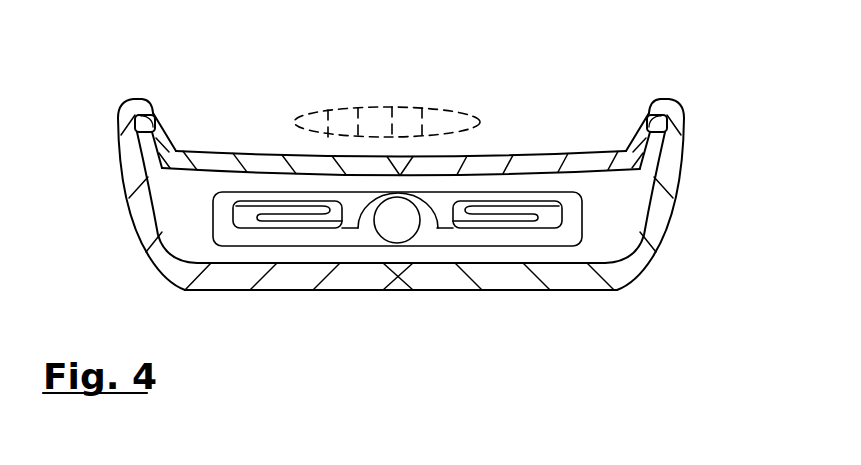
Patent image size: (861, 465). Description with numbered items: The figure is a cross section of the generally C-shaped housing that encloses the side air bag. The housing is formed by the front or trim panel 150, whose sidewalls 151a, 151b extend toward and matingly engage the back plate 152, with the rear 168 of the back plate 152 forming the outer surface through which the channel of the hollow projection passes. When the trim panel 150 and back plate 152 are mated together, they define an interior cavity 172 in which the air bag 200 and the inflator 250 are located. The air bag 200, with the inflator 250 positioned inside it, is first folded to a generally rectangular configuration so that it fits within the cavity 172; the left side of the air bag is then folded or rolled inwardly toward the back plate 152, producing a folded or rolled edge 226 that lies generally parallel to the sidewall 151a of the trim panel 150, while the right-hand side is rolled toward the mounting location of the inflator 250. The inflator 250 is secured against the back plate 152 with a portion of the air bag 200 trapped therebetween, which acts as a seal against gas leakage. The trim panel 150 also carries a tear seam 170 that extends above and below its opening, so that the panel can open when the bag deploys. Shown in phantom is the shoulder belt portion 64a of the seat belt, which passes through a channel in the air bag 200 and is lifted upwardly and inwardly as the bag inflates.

The shoulder belt portion 64a is at (379, 106).
The trim panel 150 is at (401, 325).
The sidewall 151a is at (128, 240).
The sidewall 151b is at (673, 202).
The back plate 152 is at (358, 100).
The rear of the back plate 168 is at (218, 148).
The tear seam 170 is at (413, 290).
The interior cavity 172 is at (207, 180).
The air bag 200 is at (395, 237).
The folded or rolled edge 226 is at (252, 201).
The inflator 250 is at (397, 227).